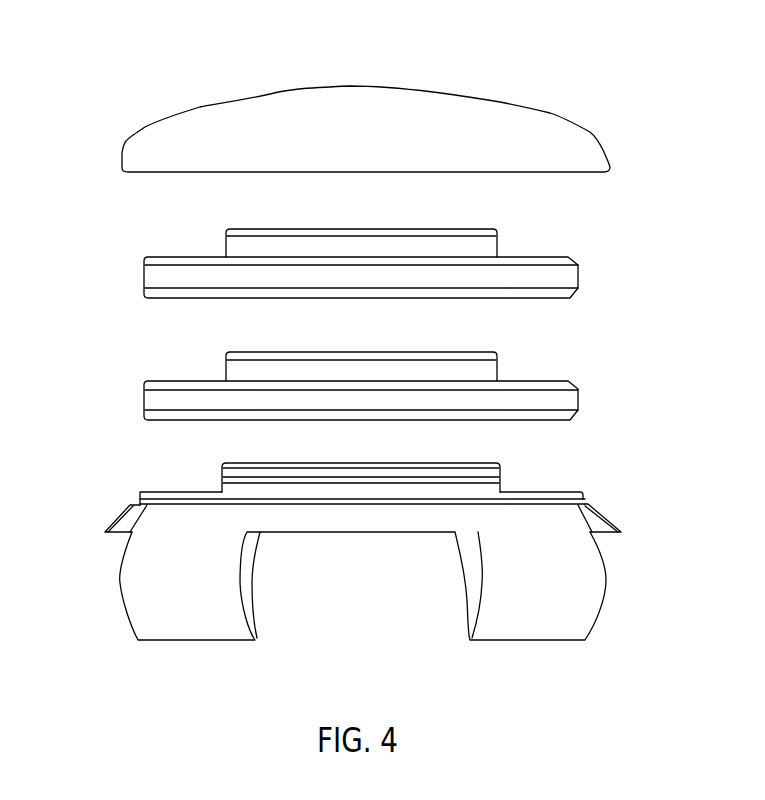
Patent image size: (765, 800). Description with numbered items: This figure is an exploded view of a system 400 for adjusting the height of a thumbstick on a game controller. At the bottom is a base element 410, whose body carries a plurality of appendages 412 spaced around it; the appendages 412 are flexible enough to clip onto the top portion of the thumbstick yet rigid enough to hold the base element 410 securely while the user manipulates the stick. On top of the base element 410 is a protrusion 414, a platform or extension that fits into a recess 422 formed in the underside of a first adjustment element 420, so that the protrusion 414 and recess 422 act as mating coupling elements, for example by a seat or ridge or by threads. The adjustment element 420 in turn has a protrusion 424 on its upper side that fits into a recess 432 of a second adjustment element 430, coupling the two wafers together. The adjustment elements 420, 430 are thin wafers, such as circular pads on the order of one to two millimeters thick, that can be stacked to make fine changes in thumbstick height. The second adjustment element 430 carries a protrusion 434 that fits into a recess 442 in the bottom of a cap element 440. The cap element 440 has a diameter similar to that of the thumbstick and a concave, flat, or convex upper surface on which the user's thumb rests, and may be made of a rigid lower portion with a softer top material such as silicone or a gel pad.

The system 400 is at (147, 78).
The base element 410 is at (122, 518).
The appendages 412 is at (197, 585).
The protrusion 414 is at (222, 473).
The adjustment element 420 is at (555, 398).
The recess 422 is at (448, 428).
The protrusion 424 is at (500, 358).
The adjustment element 430 is at (160, 270).
The recess 432 is at (441, 300).
The protrusion 434 is at (242, 240).
The cap element 440 is at (555, 151).
The recess 442 is at (458, 182).